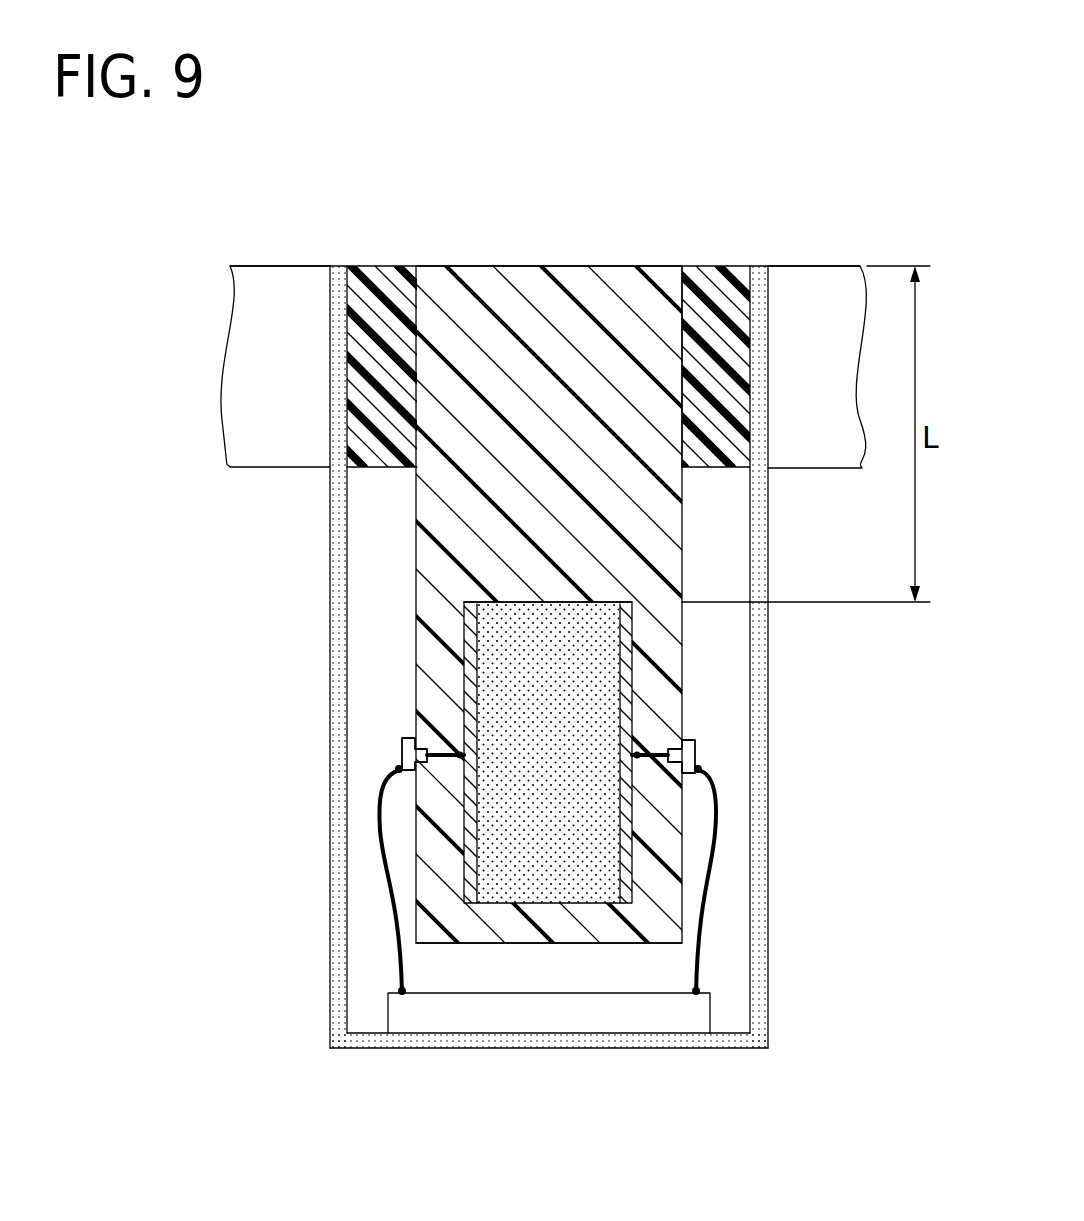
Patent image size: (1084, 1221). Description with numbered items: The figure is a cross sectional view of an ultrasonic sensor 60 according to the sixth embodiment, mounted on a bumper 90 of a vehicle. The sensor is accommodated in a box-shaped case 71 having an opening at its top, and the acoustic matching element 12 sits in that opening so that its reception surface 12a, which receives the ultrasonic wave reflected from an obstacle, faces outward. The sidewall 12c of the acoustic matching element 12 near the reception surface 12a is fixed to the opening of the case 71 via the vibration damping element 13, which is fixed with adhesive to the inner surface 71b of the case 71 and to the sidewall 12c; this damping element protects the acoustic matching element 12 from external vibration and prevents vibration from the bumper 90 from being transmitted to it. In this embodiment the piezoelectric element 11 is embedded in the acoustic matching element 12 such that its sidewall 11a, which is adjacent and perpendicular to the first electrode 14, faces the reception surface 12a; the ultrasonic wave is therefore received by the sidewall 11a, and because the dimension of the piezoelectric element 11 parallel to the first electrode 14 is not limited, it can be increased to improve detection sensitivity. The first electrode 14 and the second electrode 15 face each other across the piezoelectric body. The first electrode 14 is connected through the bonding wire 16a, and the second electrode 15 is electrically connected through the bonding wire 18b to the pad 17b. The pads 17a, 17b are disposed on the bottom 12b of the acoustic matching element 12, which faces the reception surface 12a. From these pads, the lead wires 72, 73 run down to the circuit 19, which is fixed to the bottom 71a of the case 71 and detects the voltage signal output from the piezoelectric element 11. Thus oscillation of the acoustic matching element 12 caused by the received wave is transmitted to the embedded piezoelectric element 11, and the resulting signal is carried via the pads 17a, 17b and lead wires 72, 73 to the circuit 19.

The ultrasonic sensor 60 is at (838, 239).
The bumper 90 is at (293, 277).
The vibration damping element 13 is at (370, 277).
The acoustic matching element 12 is at (542, 588).
The reception surface 12a is at (590, 265).
The bottom 12b is at (650, 945).
The sidewall 12c is at (683, 288).
The piezoelectric element 11 is at (552, 702).
The sidewall 11a is at (503, 600).
The first electrode 14 is at (470, 618).
The second electrode 15 is at (627, 618).
The bonding wire 16a is at (452, 748).
The bonding wire 18b is at (650, 747).
The pad 17a is at (400, 752).
The pad 17b is at (697, 750).
The lead wire 72 is at (400, 920).
The lead wire 73 is at (697, 923).
The circuit 19 is at (388, 1003).
The case 71 is at (541, 657).
The bottom 71a is at (377, 1033).
The inner surface 71b is at (757, 852).